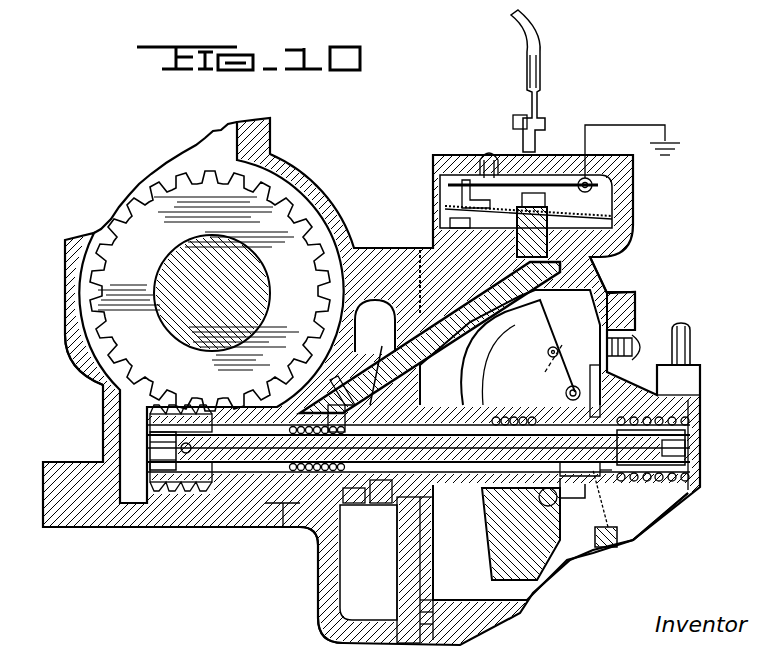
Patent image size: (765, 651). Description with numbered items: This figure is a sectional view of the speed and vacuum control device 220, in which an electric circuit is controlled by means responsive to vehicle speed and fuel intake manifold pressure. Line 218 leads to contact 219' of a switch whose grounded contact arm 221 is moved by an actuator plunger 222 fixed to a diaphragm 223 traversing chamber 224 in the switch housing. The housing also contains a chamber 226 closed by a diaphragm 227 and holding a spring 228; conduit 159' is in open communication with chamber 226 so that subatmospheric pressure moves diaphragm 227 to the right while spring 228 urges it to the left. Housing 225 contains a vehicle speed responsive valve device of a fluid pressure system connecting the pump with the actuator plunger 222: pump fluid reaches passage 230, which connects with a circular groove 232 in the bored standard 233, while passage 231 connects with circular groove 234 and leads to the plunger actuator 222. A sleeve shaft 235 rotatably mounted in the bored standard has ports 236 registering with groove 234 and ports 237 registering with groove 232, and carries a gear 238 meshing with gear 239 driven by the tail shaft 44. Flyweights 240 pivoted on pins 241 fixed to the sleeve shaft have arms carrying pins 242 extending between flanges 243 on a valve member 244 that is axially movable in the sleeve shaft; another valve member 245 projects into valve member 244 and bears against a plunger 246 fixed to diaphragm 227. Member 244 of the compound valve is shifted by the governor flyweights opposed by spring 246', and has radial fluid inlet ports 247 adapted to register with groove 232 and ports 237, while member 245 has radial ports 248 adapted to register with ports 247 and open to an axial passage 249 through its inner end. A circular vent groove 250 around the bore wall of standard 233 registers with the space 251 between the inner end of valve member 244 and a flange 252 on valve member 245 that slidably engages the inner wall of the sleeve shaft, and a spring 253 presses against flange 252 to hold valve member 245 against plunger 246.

The tail shaft 44 is at (270, 294).
The conduit 159' is at (695, 359).
The line 218 is at (541, 52).
The contact 219' is at (445, 194).
The device 220 is at (640, 298).
The contact arm 221 is at (548, 178).
The actuator plunger 222 is at (548, 244).
The diaphragm 223 is at (614, 213).
The chamber 224 is at (455, 222).
The housing 225 is at (600, 277).
The chamber 226 is at (658, 521).
The diaphragm 227 is at (620, 538).
The spring 228 is at (690, 495).
The passage 230 is at (435, 256).
The passage 231 is at (520, 290).
The circular groove 232 is at (368, 562).
The bored standard 233 is at (312, 540).
The circular groove 234 is at (272, 527).
The sleeve shaft 235 is at (158, 418).
The ports 236 is at (242, 528).
The ports 237 is at (422, 570).
The gear 238 is at (172, 480).
The gear 239 is at (98, 376).
The flyweights 240 is at (548, 345).
The pins 241 is at (577, 388).
The pins 242 is at (549, 362).
The flanges 243 is at (576, 495).
The valve member 244 is at (587, 468).
The valve member 245 is at (596, 410).
The plunger 246 is at (680, 449).
The spring 246' is at (507, 401).
The radial fluid inlet ports 247 is at (380, 504).
The radial ports 248 is at (356, 504).
The axial passage 249 is at (348, 385).
The circular vent groove 250 is at (375, 326).
The space 251 is at (384, 352).
The flange 252 is at (318, 566).
The spring 253 is at (330, 406).